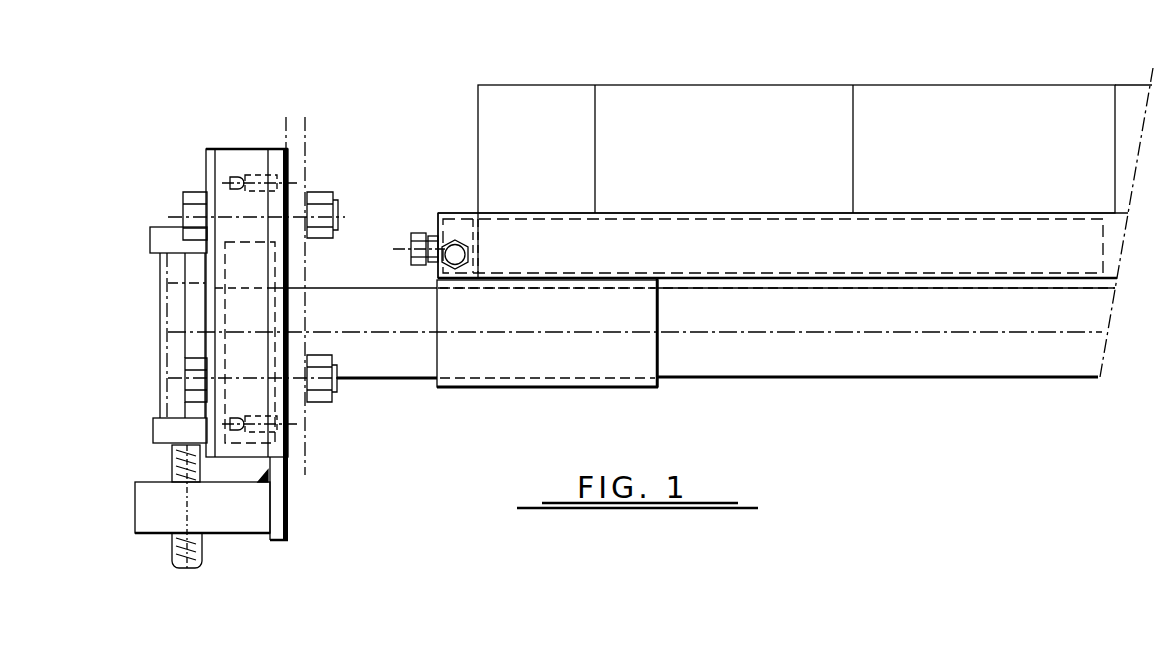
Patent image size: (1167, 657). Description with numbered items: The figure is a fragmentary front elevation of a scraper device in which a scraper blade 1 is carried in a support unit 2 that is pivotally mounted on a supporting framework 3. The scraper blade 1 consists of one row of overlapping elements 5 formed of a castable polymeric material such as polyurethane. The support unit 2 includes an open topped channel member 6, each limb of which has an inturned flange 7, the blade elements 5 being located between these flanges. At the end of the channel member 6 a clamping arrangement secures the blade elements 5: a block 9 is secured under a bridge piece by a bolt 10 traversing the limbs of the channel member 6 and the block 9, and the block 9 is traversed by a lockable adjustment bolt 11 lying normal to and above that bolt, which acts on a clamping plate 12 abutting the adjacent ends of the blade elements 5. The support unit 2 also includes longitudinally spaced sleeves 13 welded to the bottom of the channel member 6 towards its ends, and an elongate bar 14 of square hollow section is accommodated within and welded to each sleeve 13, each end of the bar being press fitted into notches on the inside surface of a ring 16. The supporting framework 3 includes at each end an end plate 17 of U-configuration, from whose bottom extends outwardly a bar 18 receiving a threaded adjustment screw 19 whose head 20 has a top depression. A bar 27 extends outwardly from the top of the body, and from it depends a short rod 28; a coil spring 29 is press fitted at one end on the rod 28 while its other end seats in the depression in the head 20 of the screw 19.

The scraper blade 1 is at (815, 106).
The support unit 2 is at (388, 286).
The supporting framework 3 is at (308, 453).
The overlapping elements 5 is at (742, 113).
The channel member 6 is at (802, 231).
The inturned flange 7 is at (1100, 218).
The block 9 is at (422, 211).
The bolt 10 is at (450, 250).
The lockable adjustment bolt 11 is at (417, 242).
The clamping plate 12 is at (480, 240).
The sleeve 13 is at (658, 387).
The elongate bar 14 is at (1023, 357).
The ring 16 is at (276, 290).
The end plate 17 is at (230, 147).
The bar 18 is at (240, 515).
The threaded adjustment screw 19 is at (197, 567).
The head 20 is at (172, 432).
The bar 27 is at (165, 233).
The short rod 28 is at (163, 277).
The coil spring 29 is at (160, 322).